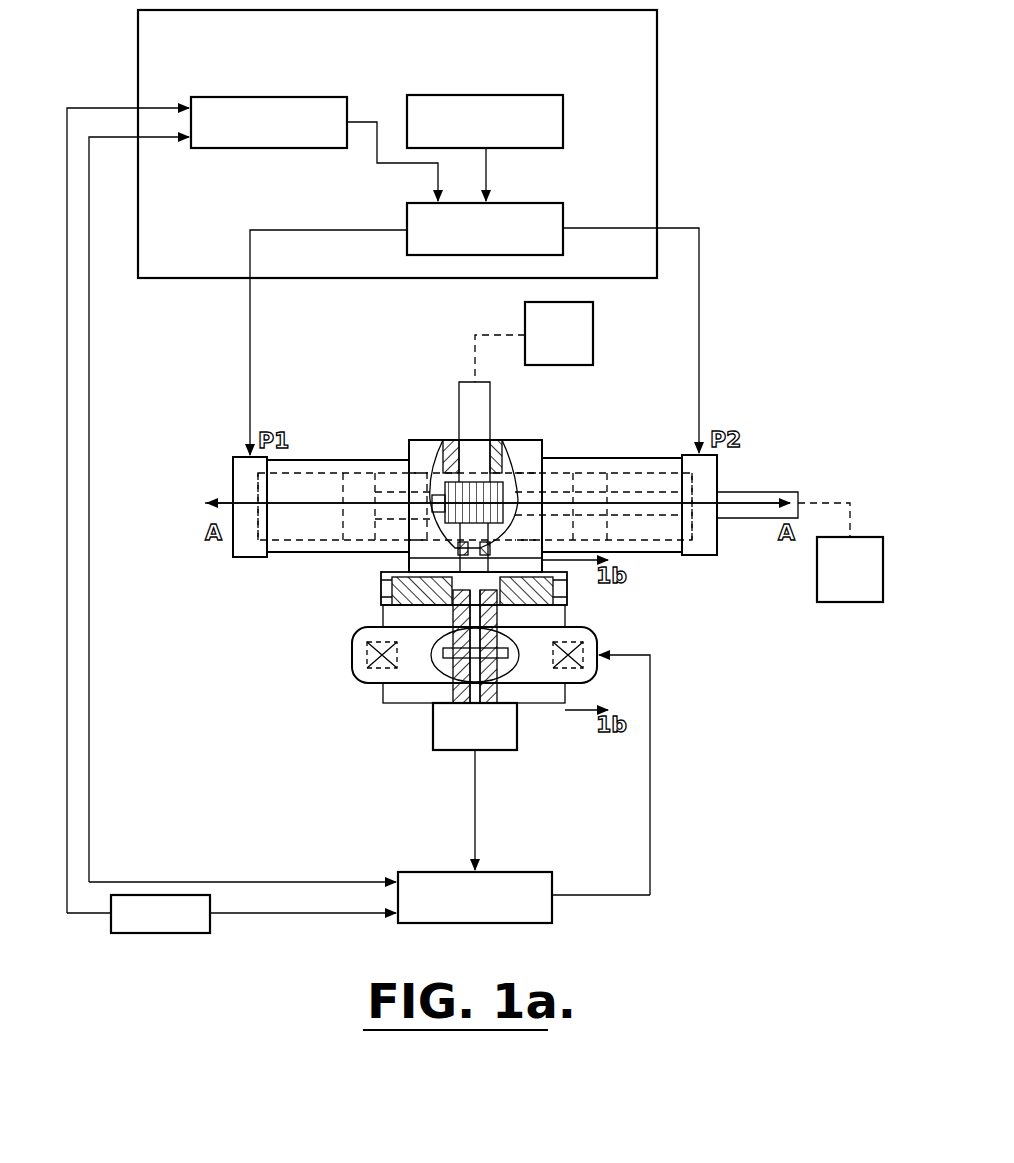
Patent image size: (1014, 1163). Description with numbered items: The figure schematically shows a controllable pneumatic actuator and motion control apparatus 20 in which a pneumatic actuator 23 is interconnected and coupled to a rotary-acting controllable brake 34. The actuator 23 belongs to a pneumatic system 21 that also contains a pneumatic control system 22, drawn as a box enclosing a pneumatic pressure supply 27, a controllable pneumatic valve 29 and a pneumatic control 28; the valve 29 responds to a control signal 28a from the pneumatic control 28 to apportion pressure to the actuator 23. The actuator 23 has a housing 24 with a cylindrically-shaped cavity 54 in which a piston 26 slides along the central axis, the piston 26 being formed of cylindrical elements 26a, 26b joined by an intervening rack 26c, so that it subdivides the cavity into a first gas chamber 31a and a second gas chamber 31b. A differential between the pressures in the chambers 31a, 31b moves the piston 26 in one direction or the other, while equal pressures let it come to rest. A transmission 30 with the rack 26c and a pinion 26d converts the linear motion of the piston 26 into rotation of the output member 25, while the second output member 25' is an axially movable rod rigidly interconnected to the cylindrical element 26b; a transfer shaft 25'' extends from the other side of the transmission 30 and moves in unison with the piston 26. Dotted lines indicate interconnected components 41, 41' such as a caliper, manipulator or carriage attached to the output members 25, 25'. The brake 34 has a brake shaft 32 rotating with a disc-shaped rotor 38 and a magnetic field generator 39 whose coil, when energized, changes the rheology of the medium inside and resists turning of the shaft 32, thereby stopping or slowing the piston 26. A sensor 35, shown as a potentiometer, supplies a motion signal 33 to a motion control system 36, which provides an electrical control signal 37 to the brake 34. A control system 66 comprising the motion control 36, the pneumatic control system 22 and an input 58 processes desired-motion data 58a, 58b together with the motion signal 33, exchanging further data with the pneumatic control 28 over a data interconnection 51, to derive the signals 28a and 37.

The controllable pneumatic actuator and motion control apparatus 20 is at (750, 258).
The pneumatic system 21 is at (230, 365).
The pneumatic control system 22 is at (657, 95).
The pneumatic actuator 23 is at (270, 560).
The housing 24 is at (575, 458).
The output member 25 is at (497, 429).
The second output member 25' is at (505, 488).
The transfer shaft 25'' is at (446, 637).
The piston 26 is at (430, 477).
The cylindrical element 26a is at (355, 473).
The cylindrical element 26b is at (597, 473).
The rack 26c is at (514, 493).
The pinion 26d is at (471, 485).
The pneumatic pressure supply 27 is at (511, 95).
The pneumatic control 28 is at (301, 97).
The control signal 28a is at (377, 152).
The controllable pneumatic valve 29 is at (512, 203).
The transmission 30 is at (409, 440).
The first gas chamber 31a is at (283, 540).
The second gas chamber 31b is at (638, 492).
The brake shaft 32 is at (537, 604).
The motion signal 33 is at (478, 813).
The rotary-acting controllable brake 34 is at (358, 680).
The sensor 35 is at (518, 728).
The motion control system 36 is at (522, 872).
The control signal 37 is at (650, 768).
The rotor 38 is at (508, 651).
The magnetic field generator 39 is at (367, 657).
The interconnected component 41 is at (559, 342).
The interconnected component 41' is at (822, 556).
The data interconnection 51 is at (93, 775).
The cylindrically-shaped cavity 54 is at (330, 498).
The input 58 is at (111, 927).
The desired motion input data 58a is at (302, 918).
The desired motion input data 58b is at (67, 762).
The control system 66 is at (112, 95).